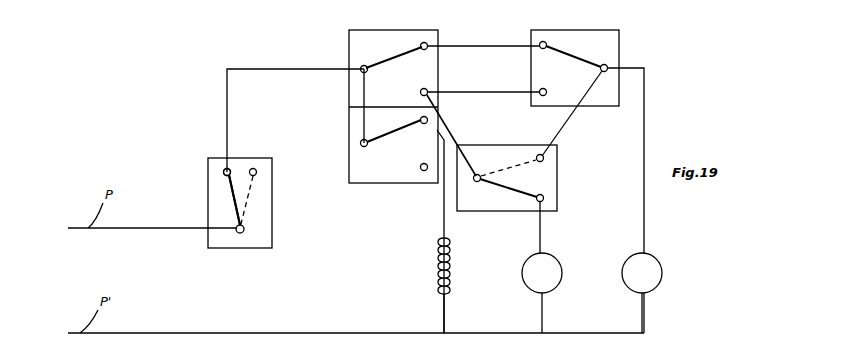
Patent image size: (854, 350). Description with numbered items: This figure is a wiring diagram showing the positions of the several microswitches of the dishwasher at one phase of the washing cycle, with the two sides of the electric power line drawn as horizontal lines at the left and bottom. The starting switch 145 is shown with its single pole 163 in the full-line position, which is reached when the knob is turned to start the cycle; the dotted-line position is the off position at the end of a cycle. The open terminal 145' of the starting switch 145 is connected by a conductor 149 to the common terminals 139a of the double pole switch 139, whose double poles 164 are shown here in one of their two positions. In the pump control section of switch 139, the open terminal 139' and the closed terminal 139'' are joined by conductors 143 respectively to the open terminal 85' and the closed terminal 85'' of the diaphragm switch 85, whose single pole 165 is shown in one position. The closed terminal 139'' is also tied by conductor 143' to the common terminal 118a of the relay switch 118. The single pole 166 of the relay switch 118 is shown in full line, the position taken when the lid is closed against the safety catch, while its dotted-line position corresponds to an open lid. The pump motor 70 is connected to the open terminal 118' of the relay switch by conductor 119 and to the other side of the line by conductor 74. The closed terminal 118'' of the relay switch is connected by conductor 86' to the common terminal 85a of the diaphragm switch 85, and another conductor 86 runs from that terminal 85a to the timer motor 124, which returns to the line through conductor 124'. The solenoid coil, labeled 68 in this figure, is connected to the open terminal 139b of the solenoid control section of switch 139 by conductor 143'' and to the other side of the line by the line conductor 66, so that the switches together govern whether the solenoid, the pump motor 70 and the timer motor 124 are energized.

The conductor 149 is at (255, 69).
The starting switch 145 is at (262, 203).
The open terminal 145' is at (198, 164).
The single pole 163 is at (236, 193).
The double pole switch 139 is at (366, 106).
The common terminals 139a is at (360, 72).
The open terminal 139b is at (420, 120).
The open terminal 139' is at (455, 33).
The closed terminal 139'' is at (411, 82).
The double poles 164 is at (402, 60).
The conductors 143 is at (484, 69).
The conductor 143' is at (461, 135).
The conductor 143'' is at (418, 231).
The diaphragm switch 85 is at (595, 68).
The open terminal 85' is at (563, 39).
The closed terminal 85'' is at (533, 113).
The common terminal 85a is at (619, 68).
The single pole 165 is at (575, 62).
The conductor 86 is at (648, 200).
The conductor 86' is at (578, 113).
The relay switch 118 is at (529, 178).
The common terminal 118a is at (478, 191).
The open terminal 118' is at (571, 197).
The closed terminal 118'' is at (545, 163).
The single pole 166 is at (505, 190).
The conductor 119 is at (542, 230).
The relay coil 68 is at (436, 262).
The line conductor 66 is at (446, 318).
The pump motor 70 is at (558, 259).
The conductor 74 is at (544, 318).
The timer motor 124 is at (669, 270).
The conductor 124' is at (672, 313).